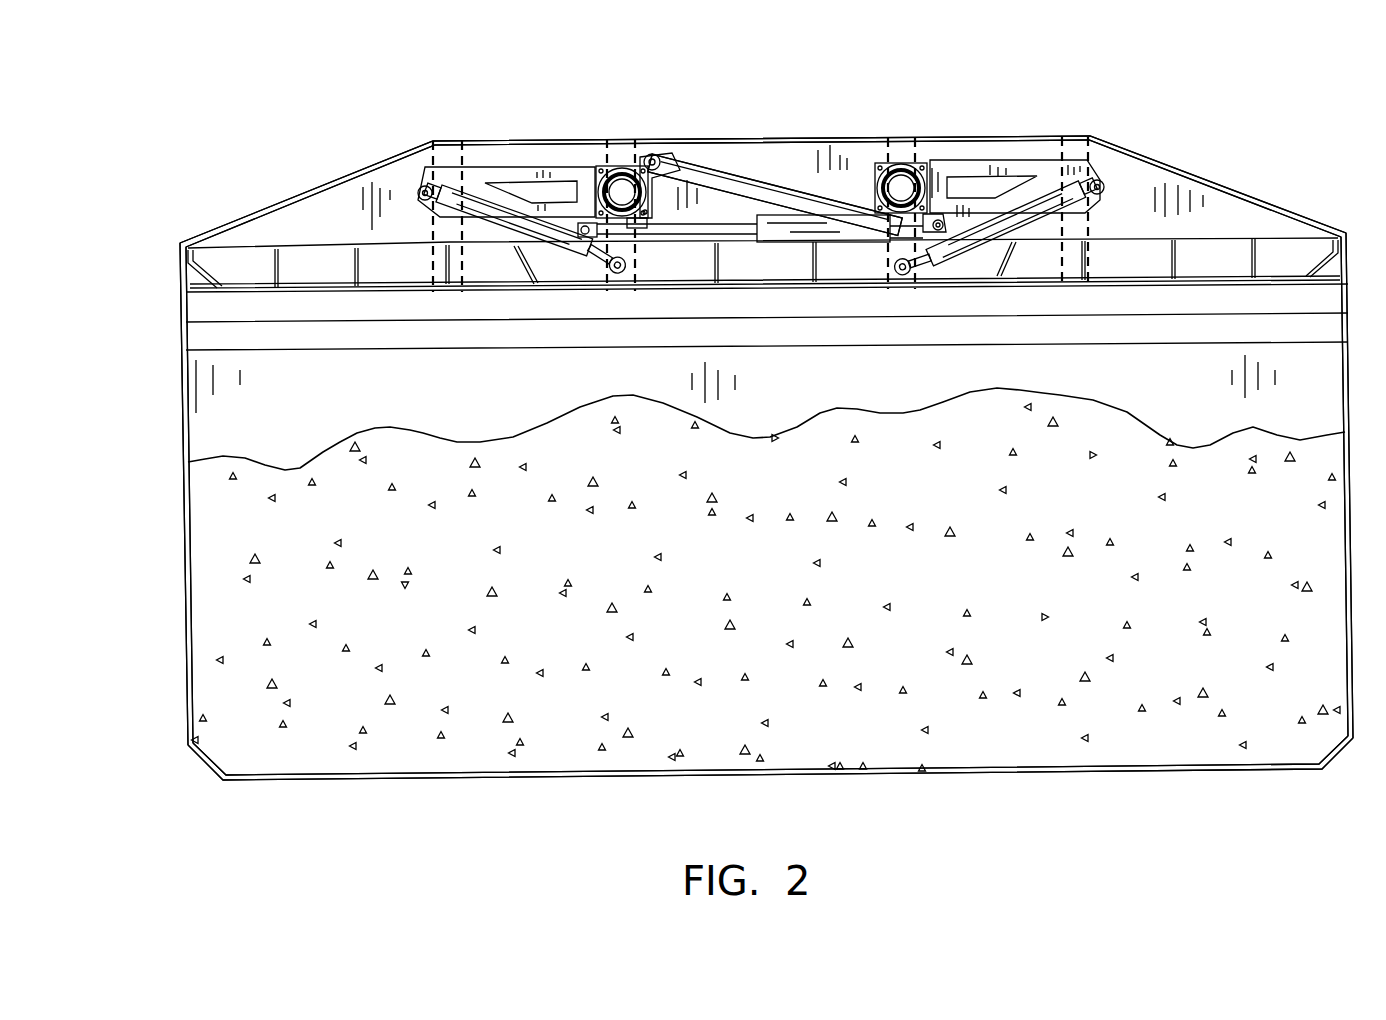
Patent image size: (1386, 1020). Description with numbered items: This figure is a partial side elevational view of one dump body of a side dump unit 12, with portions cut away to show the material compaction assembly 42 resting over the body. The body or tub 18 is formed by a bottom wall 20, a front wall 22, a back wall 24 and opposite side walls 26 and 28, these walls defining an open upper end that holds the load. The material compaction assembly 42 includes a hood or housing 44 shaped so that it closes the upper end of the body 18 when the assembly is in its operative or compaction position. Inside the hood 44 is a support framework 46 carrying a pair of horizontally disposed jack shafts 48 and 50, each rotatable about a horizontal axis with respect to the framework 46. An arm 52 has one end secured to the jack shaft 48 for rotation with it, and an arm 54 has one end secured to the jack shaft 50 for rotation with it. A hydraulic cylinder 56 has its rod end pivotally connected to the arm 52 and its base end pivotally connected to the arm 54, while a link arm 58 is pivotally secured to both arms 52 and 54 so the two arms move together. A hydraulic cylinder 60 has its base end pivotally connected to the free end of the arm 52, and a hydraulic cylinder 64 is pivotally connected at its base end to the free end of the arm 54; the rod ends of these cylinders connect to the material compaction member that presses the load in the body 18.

The side dump unit 12 is at (283, 150).
The body or tub 18 is at (172, 371).
The bottom wall 20 is at (405, 782).
The front wall 22 is at (1350, 345).
The back wall 24 is at (182, 427).
The side wall 26 is at (1025, 620).
The side wall 28 is at (546, 398).
The material compaction assembly 42 is at (902, 125).
The hood or housing 44 is at (1157, 160).
The support framework 46 is at (750, 158).
The jack shaft 48 is at (620, 188).
The jack shaft 50 is at (904, 184).
The arm 52 is at (482, 180).
The arm 54 is at (1027, 167).
The hydraulic cylinder 56 is at (843, 230).
The link arm 58 is at (770, 176).
The hydraulic cylinder 60 is at (483, 220).
The hydraulic cylinder 64 is at (974, 243).